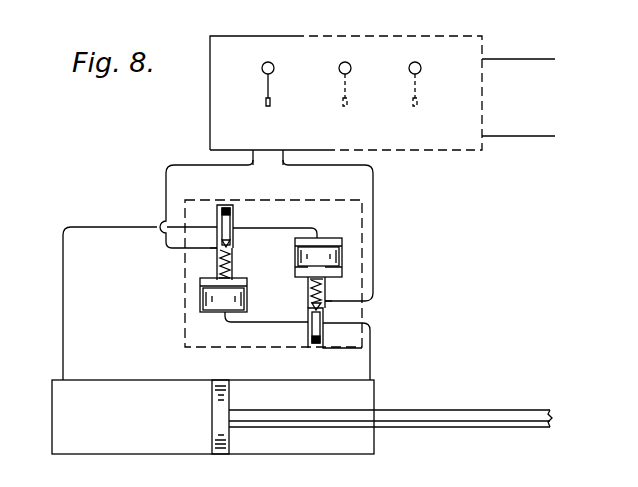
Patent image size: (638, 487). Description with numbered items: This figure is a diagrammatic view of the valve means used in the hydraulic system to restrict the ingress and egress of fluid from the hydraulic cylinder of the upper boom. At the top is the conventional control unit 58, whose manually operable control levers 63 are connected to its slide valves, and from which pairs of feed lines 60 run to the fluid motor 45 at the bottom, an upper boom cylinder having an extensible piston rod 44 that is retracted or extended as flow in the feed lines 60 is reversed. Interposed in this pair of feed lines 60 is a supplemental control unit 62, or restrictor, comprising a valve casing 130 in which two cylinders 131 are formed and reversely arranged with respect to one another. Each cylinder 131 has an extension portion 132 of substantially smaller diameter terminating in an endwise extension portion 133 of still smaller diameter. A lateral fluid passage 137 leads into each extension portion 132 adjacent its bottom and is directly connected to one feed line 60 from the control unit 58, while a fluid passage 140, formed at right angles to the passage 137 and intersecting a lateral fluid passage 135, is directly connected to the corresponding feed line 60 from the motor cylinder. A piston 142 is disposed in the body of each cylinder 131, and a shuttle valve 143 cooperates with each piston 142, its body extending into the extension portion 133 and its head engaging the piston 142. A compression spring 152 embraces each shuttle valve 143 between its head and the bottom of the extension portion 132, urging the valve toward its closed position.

The control unit 58 is at (210, 88).
The control lever 63 is at (270, 90).
The feed line 60 is at (190, 166).
The valve casing 130 is at (358, 208).
The supplemental control unit 62 is at (362, 234).
The fluid passage 140 is at (212, 230).
The endwise extension portion 133 is at (231, 211).
The shuttle valve 143 is at (230, 239).
The extension portion 132 is at (230, 263).
The compression spring 152 is at (233, 268).
The lateral fluid passage 137 is at (205, 249).
The cylinder 131 is at (199, 283).
The piston 142 is at (203, 291).
The lateral fluid passage 135 is at (287, 228).
The fluid motor 45 is at (56, 413).
The piston rod 44 is at (431, 418).